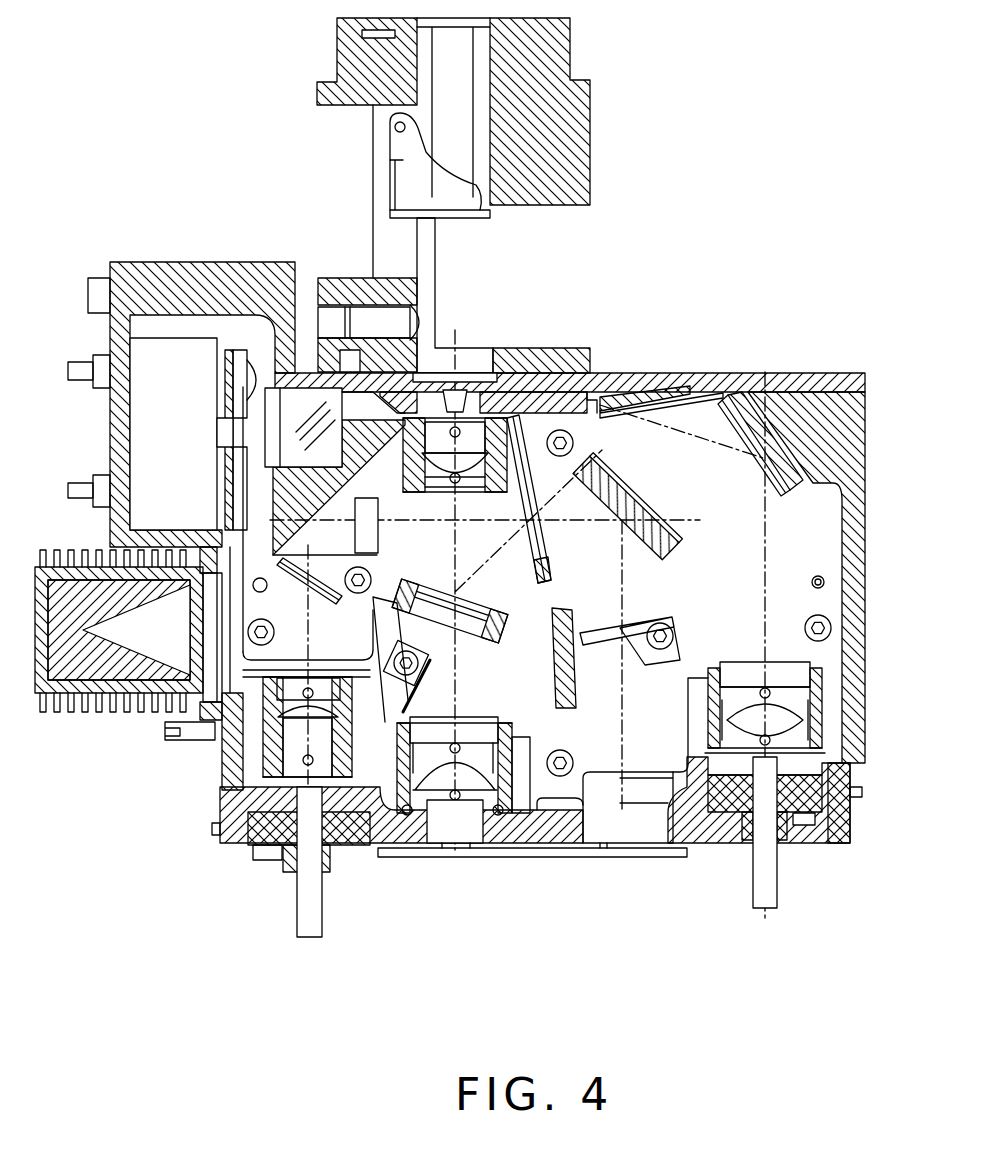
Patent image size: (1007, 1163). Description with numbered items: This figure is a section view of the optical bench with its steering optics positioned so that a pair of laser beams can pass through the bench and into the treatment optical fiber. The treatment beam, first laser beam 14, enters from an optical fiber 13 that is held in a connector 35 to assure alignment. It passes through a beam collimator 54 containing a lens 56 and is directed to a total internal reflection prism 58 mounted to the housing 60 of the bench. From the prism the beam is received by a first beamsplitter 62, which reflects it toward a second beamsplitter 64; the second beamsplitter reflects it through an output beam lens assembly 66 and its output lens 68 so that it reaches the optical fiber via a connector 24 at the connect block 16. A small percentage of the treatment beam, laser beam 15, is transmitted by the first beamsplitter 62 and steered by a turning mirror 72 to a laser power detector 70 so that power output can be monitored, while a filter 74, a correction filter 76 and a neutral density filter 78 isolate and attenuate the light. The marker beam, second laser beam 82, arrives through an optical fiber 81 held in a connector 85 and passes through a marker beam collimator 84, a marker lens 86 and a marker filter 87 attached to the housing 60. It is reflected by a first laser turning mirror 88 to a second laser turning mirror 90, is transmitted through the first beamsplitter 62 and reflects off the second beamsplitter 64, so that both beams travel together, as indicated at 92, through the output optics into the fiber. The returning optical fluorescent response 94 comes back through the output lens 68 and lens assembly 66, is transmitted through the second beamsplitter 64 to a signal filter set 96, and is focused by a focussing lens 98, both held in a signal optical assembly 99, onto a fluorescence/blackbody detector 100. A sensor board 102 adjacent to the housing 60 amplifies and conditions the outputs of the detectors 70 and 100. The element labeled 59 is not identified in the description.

The optical fiber 13 is at (298, 915).
The first laser beam 14 is at (287, 873).
The laser beam 15 is at (562, 546).
The connect block 16 is at (584, 146).
The connector 24 is at (481, 355).
The connector 35 is at (256, 830).
The beam collimator 54 is at (262, 762).
The lens 56 is at (388, 712).
The total internal reflection prism 58 is at (341, 493).
The connector 59 is at (165, 732).
The housing 60 is at (722, 374).
The first beamsplitter 62 is at (515, 538).
The second beamsplitter 64 is at (438, 590).
The output beam lens assembly 66 is at (520, 458).
The output lens 68 is at (452, 487).
The laser power detector 70 is at (625, 858).
The turning mirror 72 is at (632, 548).
The filter 74 is at (316, 603).
The correction filter 76 is at (578, 655).
The neutral density filter 78 is at (595, 772).
The optical fiber 81 is at (745, 900).
The second laser beam 82 is at (763, 533).
The marker beam collimator 84 is at (707, 688).
The connector 85 is at (725, 850).
The marker lens 86 is at (720, 748).
The marker filter 87 is at (735, 668).
The first laser turning mirror 88 is at (778, 497).
The second laser turning mirror 90 is at (666, 412).
The routed laser beams 92 is at (455, 545).
The optical fluorescent response 94 is at (445, 662).
The signal filter set 96 is at (490, 722).
The focussing lens 98 is at (455, 750).
The signal optical assembly 99 is at (500, 735).
The fluorescence/blackbody detector 100 is at (456, 858).
The sensor board 102 is at (480, 858).